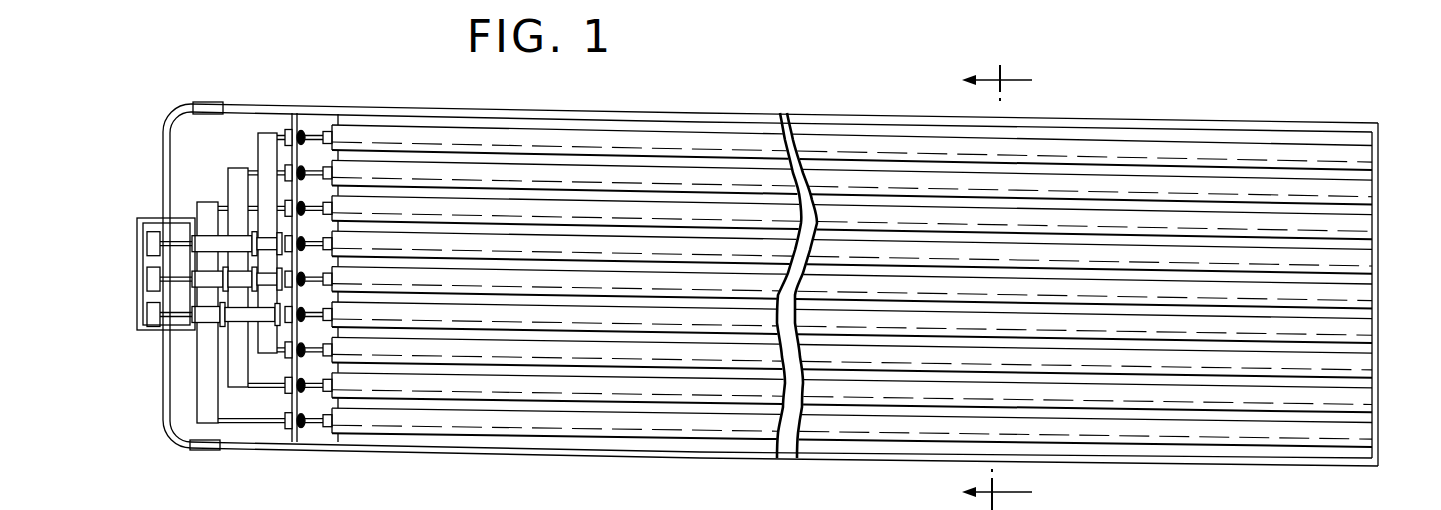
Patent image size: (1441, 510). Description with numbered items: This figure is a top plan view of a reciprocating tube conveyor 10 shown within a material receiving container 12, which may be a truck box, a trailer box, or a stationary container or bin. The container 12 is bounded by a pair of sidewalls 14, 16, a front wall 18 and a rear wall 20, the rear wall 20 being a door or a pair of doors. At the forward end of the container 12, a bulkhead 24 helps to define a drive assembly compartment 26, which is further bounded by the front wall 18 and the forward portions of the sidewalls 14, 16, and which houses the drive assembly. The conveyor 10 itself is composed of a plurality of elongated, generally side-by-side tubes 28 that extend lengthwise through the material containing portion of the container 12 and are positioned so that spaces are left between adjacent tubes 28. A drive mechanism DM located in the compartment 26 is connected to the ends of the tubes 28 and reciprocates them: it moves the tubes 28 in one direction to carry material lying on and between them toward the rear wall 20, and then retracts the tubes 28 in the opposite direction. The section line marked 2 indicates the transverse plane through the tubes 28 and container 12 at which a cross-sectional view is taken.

The reciprocating tube conveyor 10 is at (772, 282).
The material receiving container 12 is at (410, 405).
The sidewall 14 is at (684, 113).
The sidewall 16 is at (873, 462).
The front wall 18 is at (160, 425).
The rear wall 20 is at (1382, 197).
The bulkhead 24 is at (290, 400).
The drive assembly compartment 26 is at (218, 127).
The tubes 28 is at (871, 150).
The drive mechanism DM is at (205, 160).
The section line 2- 2 is at (996, 276).